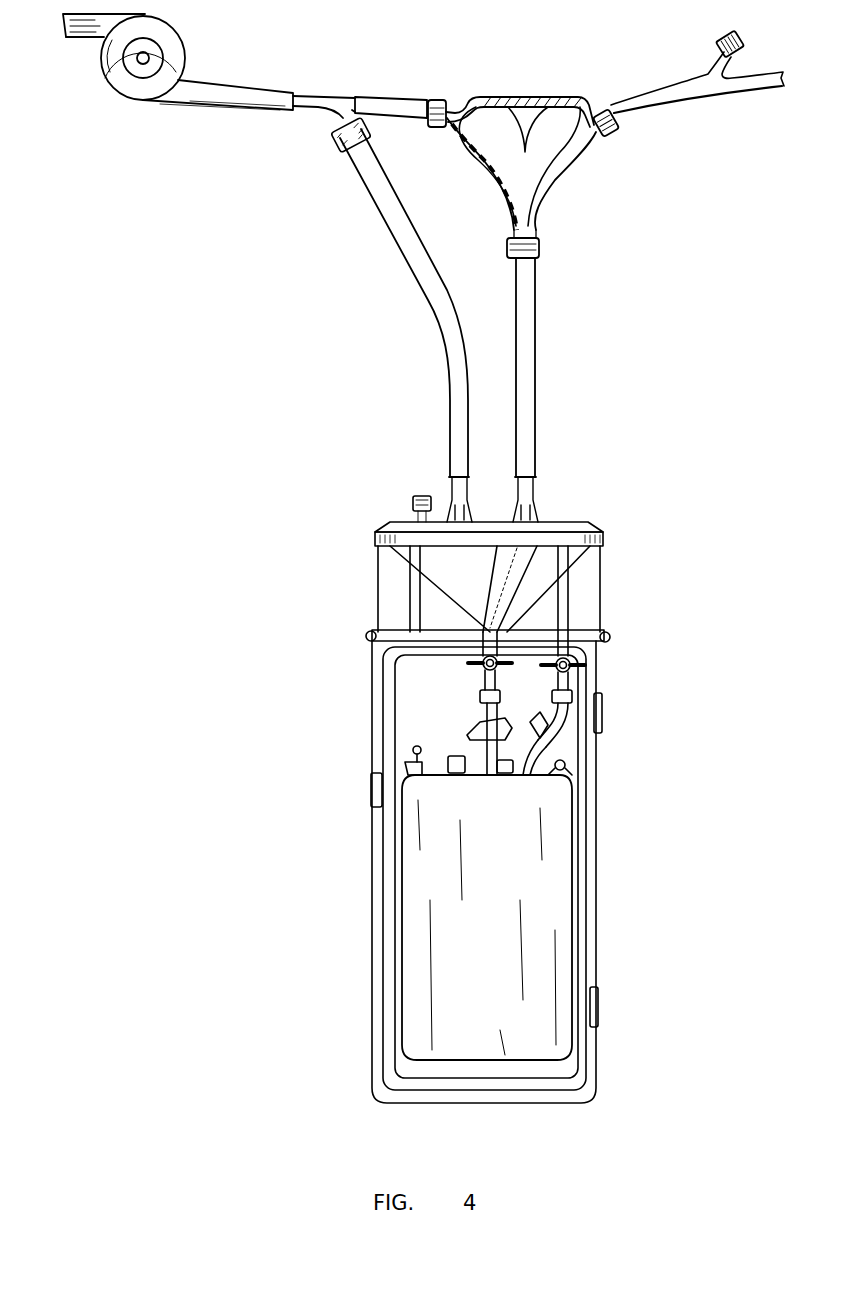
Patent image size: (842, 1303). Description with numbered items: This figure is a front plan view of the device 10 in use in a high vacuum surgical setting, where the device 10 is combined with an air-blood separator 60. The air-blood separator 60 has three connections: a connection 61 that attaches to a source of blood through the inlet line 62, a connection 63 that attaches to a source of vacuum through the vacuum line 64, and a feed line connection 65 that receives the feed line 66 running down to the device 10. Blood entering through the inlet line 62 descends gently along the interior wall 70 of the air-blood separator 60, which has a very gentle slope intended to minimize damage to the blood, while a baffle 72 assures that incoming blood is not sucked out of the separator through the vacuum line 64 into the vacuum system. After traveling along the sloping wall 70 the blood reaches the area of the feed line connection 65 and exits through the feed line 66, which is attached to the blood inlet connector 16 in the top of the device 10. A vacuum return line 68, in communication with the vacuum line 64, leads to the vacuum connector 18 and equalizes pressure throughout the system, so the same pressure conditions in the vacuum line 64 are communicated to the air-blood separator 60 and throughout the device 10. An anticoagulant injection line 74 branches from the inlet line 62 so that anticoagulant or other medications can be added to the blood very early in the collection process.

The device 10 is at (320, 718).
The blood inlet connector 16 is at (523, 497).
The vacuum connector 18 is at (458, 498).
The air-blood separator 60 is at (594, 140).
The connection 61 is at (601, 113).
The inlet line 62 is at (636, 98).
The connection 63 is at (437, 110).
The vacuum line 64 is at (400, 107).
The feed line connection 65 is at (540, 246).
The feed line 66 is at (525, 368).
The vacuum return line 68 is at (440, 245).
The interior wall 70 is at (580, 143).
The baffle 72 is at (543, 140).
The anticoagulant injection line 74 is at (713, 52).